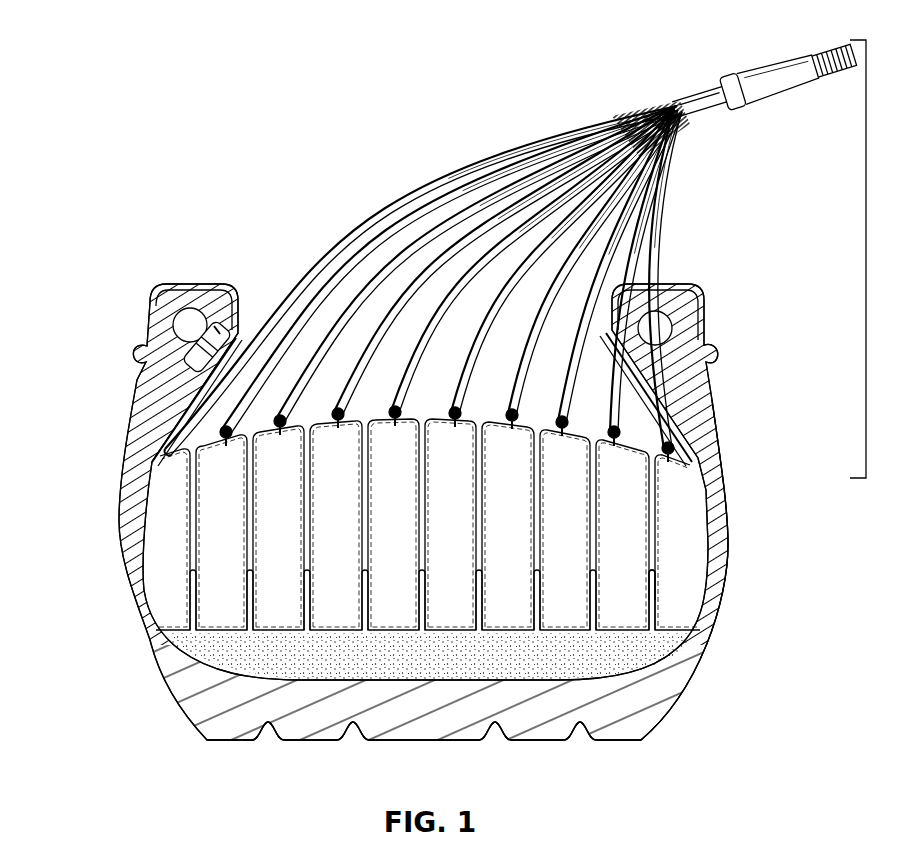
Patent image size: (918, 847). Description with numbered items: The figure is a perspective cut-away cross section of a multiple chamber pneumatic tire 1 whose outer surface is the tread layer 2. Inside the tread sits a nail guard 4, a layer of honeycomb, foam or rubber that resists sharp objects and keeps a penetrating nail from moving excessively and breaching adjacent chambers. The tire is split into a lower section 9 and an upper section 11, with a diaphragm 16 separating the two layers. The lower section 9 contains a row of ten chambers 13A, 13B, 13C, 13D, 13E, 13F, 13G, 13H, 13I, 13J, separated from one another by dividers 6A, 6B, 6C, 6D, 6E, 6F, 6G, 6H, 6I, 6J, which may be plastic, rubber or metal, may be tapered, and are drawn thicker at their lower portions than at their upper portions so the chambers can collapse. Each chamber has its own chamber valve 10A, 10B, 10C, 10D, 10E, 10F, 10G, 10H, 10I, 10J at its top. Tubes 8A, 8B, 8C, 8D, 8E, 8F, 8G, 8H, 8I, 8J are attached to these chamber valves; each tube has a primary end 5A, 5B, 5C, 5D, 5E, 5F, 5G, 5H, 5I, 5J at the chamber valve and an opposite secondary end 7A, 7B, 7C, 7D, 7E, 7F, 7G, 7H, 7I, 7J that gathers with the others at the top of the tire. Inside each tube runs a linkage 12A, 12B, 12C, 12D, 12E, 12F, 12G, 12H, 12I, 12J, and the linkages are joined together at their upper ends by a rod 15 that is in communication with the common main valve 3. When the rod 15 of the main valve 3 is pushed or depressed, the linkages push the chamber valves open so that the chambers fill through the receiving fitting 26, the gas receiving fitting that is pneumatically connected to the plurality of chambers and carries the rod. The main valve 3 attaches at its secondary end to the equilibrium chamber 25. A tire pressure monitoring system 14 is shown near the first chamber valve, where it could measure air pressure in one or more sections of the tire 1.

The pneumatic tire 1 is at (128, 585).
The tread layer 2 is at (250, 742).
The main valve 3 is at (791, 52).
The nail guard 4 is at (192, 651).
The lower section 9 is at (720, 552).
The upper section 11 is at (160, 428).
The tire pressure monitoring system 14 is at (198, 342).
The rod 15 is at (689, 76).
The diaphragm 16 is at (188, 442).
The equilibrium chamber 25 is at (727, 58).
The receiving fitting 26 is at (866, 243).
The primary end 5A is at (157, 468).
The primary end 5B is at (224, 444).
The primary end 5C is at (278, 433).
The primary end 5D is at (336, 426).
The primary end 5E is at (393, 424).
The primary end 5F is at (453, 425).
The primary end 5G is at (510, 427).
The primary end 5H is at (560, 434).
The primary end 5I is at (612, 444).
The primary end 5J is at (666, 460).
The divider 6A is at (190, 556).
The divider 6B is at (247, 556).
The divider 6C is at (304, 556).
The divider 6D is at (362, 556).
The divider 6E is at (419, 556).
The divider 6F is at (476, 556).
The divider 6G is at (534, 556).
The divider 6H is at (590, 556).
The divider 6I is at (651, 562).
The divider 6J is at (654, 566).
The secondary end 7A is at (568, 118).
The secondary end 7B is at (560, 136).
The secondary end 7C is at (545, 150).
The secondary end 7D is at (580, 152).
The secondary end 7E is at (598, 156).
The secondary end 7F is at (603, 168).
The secondary end 7G is at (624, 182).
The secondary end 7H is at (665, 168).
The secondary end 7I is at (650, 188).
The secondary end 7J is at (650, 205).
The tube 8A is at (188, 400).
The tube 8B is at (373, 212).
The tube 8C is at (413, 240).
The tube 8D is at (336, 385).
The tube 8E is at (420, 318).
The tube 8F is at (472, 312).
The tube 8G is at (526, 315).
The tube 8H is at (566, 322).
The tube 8I is at (708, 354).
The tube 8J is at (668, 425).
The chamber valve 10A is at (216, 330).
The chamber valve 10B is at (228, 448).
The chamber valve 10C is at (282, 437).
The chamber valve 10D is at (340, 430).
The chamber valve 10E is at (397, 428).
The chamber valve 10F is at (457, 429).
The chamber valve 10G is at (514, 431).
The chamber valve 10H is at (564, 438).
The chamber valve 10I is at (616, 448).
The chamber valve 10J is at (670, 464).
The linkage 12A is at (268, 295).
The linkage 12B is at (310, 297).
The linkage 12C is at (352, 303).
The linkage 12D is at (356, 350).
The linkage 12E is at (418, 355).
The linkage 12F is at (476, 360).
The linkage 12G is at (531, 363).
The linkage 12H is at (630, 240).
The linkage 12I is at (636, 262).
The linkage 12J is at (648, 270).
The chamber 13A is at (154, 622).
The chamber 13B is at (206, 622).
The chamber 13C is at (264, 622).
The chamber 13D is at (321, 622).
The chamber 13E is at (379, 622).
The chamber 13F is at (435, 622).
The chamber 13G is at (492, 622).
The chamber 13H is at (549, 622).
The chamber 13I is at (608, 622).
The chamber 13J is at (664, 622).